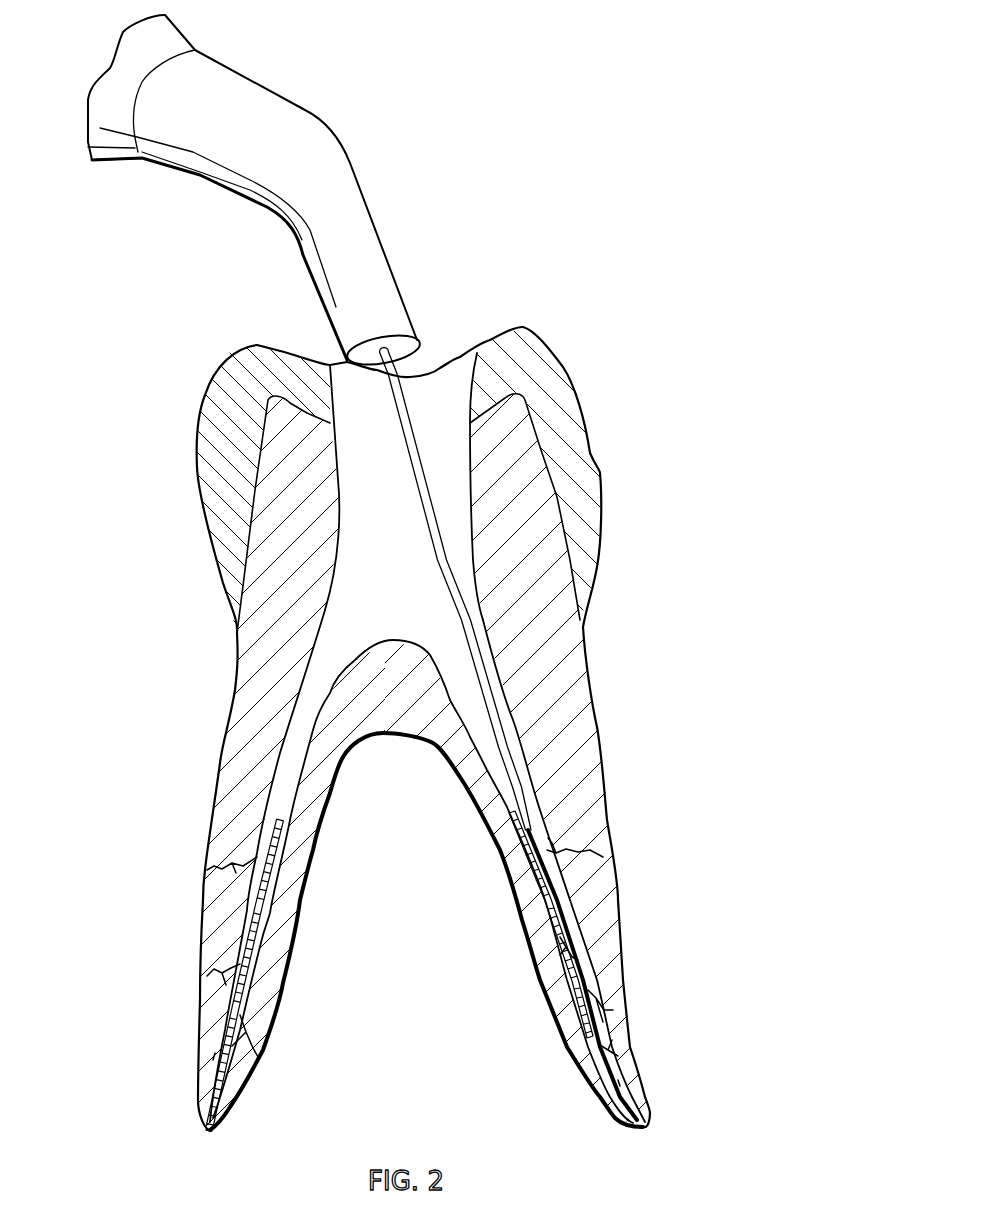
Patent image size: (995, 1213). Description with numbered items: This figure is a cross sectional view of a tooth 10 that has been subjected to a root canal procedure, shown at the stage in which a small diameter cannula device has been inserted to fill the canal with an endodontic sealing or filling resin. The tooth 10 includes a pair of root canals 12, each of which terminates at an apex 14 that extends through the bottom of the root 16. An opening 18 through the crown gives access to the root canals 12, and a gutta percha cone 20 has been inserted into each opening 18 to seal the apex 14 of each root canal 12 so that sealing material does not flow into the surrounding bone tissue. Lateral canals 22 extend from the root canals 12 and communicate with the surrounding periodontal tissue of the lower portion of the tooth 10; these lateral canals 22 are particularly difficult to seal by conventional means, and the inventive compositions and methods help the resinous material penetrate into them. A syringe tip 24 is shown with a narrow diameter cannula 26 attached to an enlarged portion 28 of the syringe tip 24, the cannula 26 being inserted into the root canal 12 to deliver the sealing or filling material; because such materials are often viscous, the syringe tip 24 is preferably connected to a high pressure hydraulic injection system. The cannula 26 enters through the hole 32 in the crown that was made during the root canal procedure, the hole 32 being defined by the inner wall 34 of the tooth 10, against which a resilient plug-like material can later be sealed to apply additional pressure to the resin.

The tooth 10 is at (560, 313).
The root canals 12 is at (270, 812).
The apex 14 is at (215, 1053).
The root 16 is at (308, 828).
The opening 18 is at (208, 1133).
The gutta percha cone 20 is at (277, 910).
The lateral canals 22 is at (209, 880).
The syringe tip 24 is at (370, 163).
The cannula 26 is at (463, 620).
The enlarged portion 28 is at (395, 307).
The hole 32 is at (447, 453).
The inner wall 34 is at (340, 530).